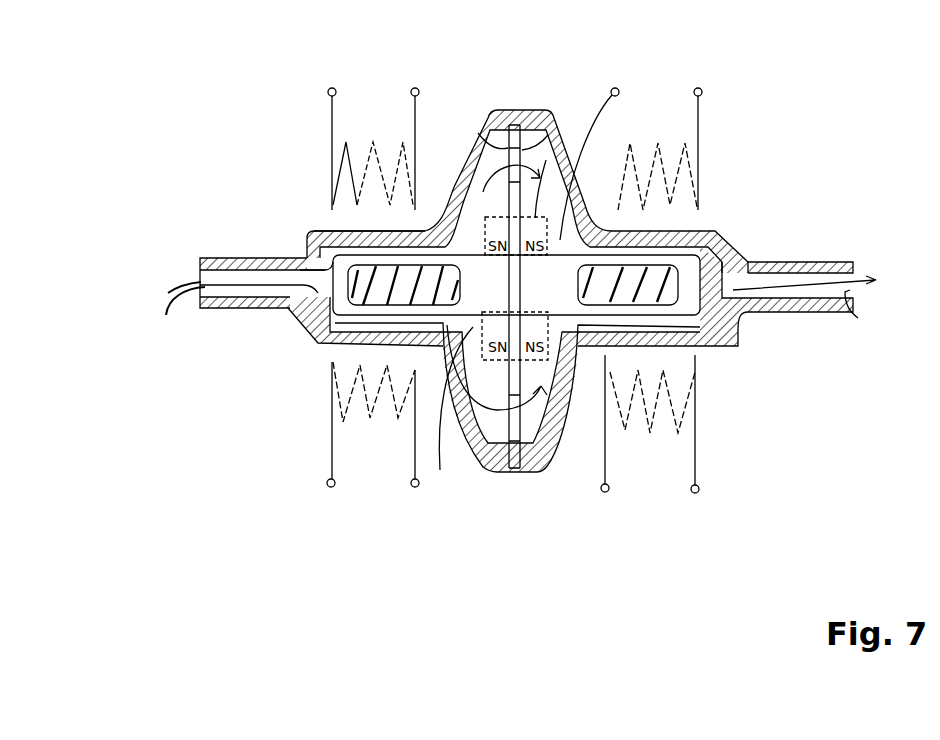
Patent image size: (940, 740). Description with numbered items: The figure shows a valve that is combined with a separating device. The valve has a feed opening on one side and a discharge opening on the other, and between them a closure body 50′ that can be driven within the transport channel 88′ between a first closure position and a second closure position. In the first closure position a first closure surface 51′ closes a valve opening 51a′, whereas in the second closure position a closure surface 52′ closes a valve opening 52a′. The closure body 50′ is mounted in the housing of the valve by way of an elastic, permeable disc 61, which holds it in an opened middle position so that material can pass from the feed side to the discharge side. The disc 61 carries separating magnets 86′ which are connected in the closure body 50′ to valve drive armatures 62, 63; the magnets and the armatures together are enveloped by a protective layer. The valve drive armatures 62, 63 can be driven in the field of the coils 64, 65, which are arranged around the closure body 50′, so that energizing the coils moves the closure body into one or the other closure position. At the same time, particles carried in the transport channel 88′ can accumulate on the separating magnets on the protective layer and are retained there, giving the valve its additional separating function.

The closure body 50′ is at (590, 347).
The first closure surface 51′ is at (327, 282).
The valve opening 51a′ is at (313, 265).
The closure surface 52′ is at (706, 290).
The valve opening 52a′ is at (750, 267).
The elastic, permeable disc 61 is at (503, 147).
The valve drive armature 62 is at (332, 243).
The valve drive armature 63 is at (657, 273).
The coil 64 is at (337, 119).
The coil 65 is at (707, 108).
The separating magnet 86′ is at (617, 89).
The transport channel 88′ is at (546, 160).